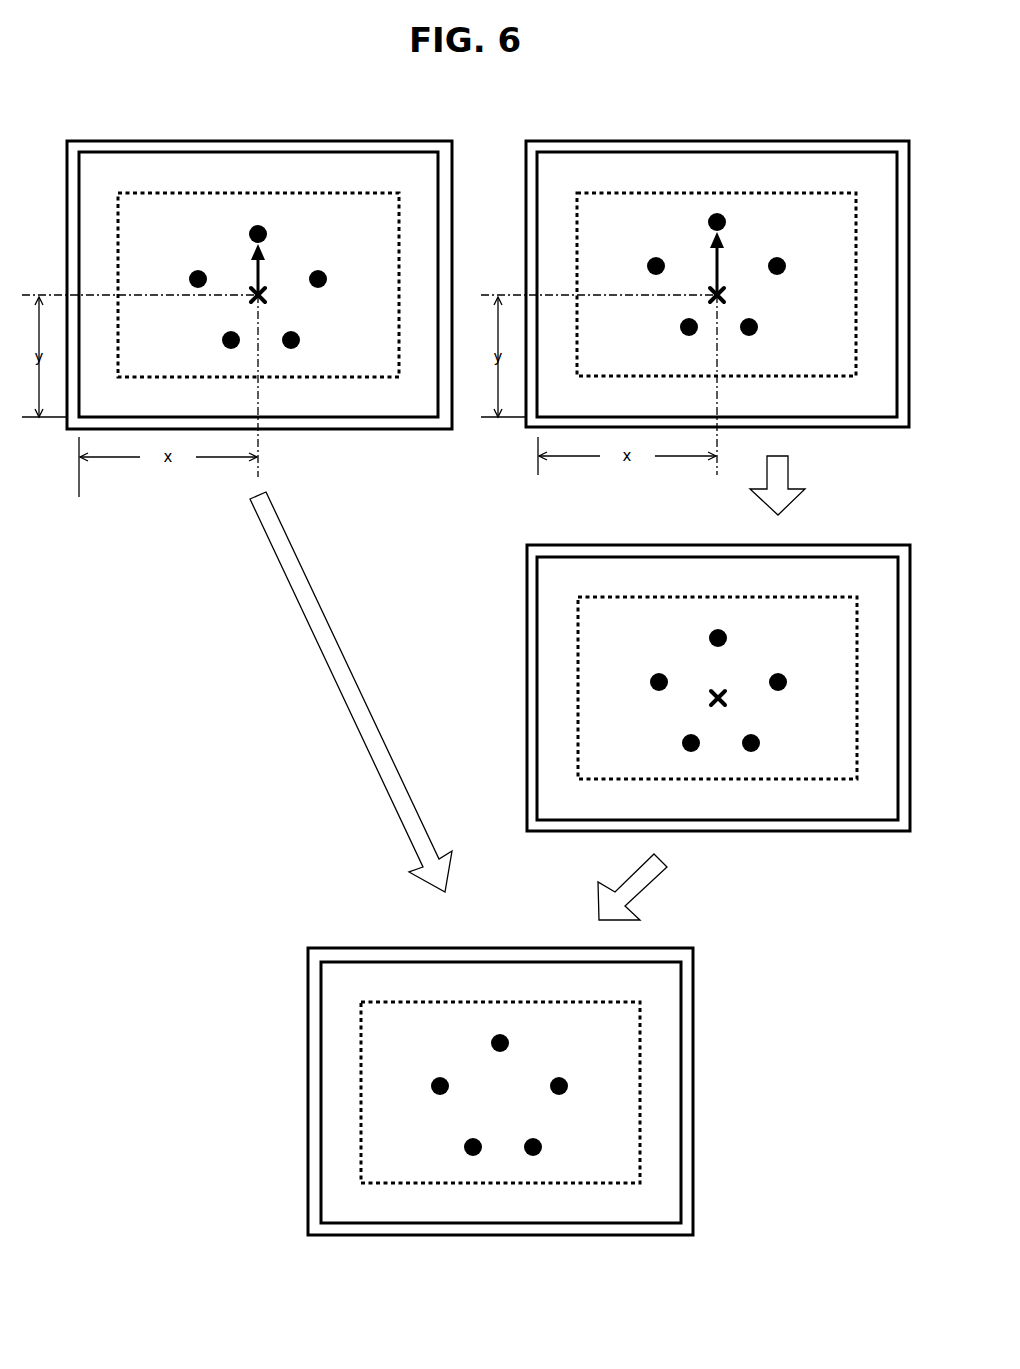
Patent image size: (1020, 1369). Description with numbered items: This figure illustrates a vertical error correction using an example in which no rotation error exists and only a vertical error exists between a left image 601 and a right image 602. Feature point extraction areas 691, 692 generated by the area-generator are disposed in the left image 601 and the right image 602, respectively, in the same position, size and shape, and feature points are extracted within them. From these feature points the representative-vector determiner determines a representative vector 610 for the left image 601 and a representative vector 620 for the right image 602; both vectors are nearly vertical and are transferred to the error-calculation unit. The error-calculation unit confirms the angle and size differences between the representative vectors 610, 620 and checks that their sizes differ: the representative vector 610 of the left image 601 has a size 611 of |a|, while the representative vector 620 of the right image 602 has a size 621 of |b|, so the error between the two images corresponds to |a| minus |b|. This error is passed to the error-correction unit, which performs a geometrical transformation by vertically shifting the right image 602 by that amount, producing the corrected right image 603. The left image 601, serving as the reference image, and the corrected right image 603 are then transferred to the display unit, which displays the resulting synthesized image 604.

The left image 601 is at (118, 165).
The right image 602 is at (593, 165).
The corrected right image 603 is at (822, 575).
The synthesized image 604 is at (663, 1042).
The feature point extraction area 691 is at (360, 192).
The feature point extraction area 692 is at (820, 192).
The representative vector 610 is at (255, 263).
The size 611 is at (279, 260).
The representative vector 620 is at (713, 262).
The size 621 is at (738, 255).